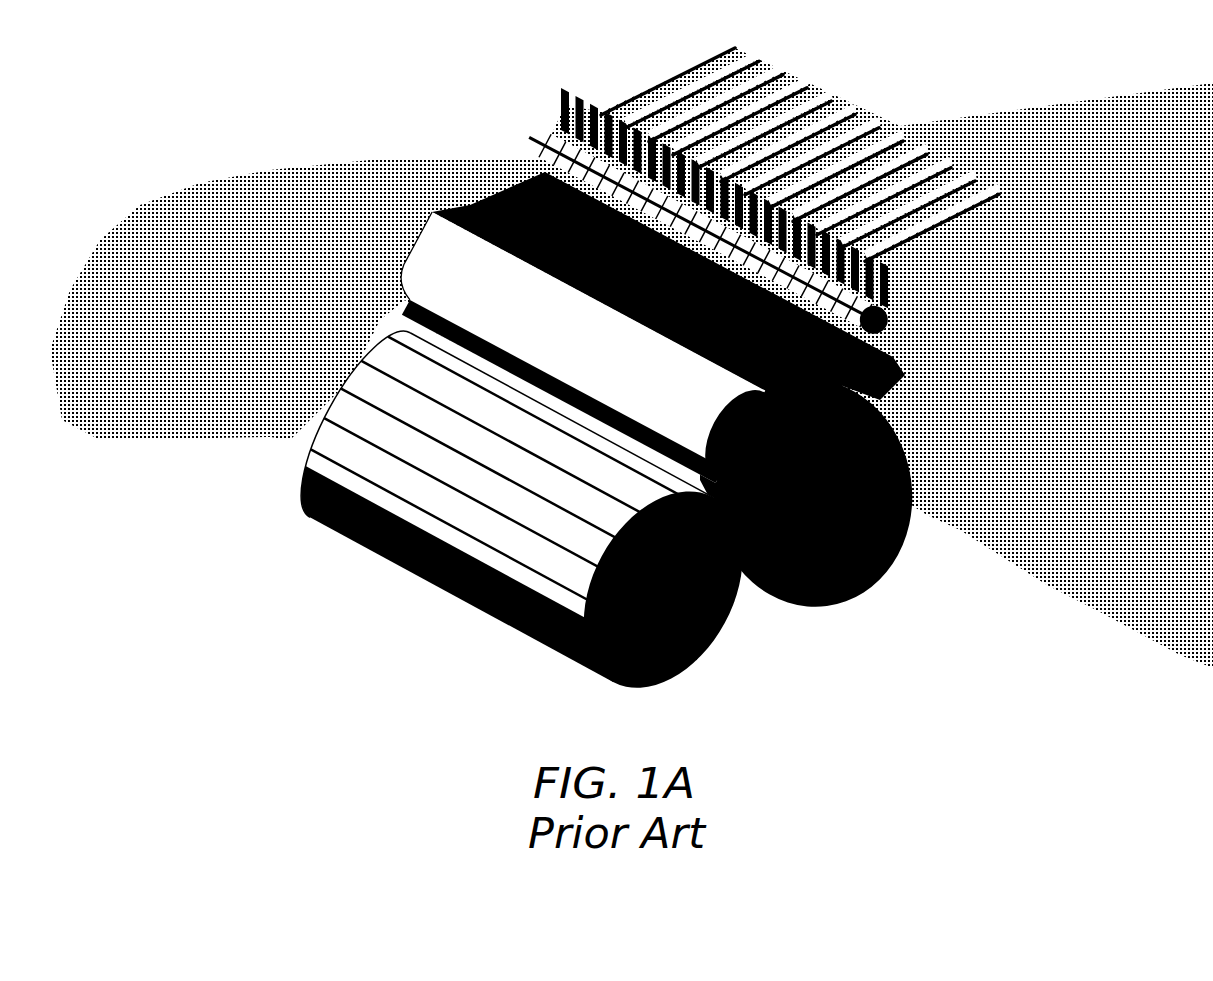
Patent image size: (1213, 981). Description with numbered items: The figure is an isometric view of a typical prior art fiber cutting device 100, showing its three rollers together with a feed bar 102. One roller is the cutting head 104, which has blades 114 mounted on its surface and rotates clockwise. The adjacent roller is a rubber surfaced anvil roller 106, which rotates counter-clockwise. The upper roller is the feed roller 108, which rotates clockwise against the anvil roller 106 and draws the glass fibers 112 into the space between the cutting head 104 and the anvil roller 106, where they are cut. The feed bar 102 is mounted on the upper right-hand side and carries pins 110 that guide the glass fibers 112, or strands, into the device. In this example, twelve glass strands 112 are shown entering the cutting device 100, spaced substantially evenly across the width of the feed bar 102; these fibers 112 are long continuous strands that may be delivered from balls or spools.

The fiber cutting device 100 is at (990, 42).
The feed bar 102 is at (544, 130).
The cutting head 104 is at (602, 672).
The anvil roller 106 is at (848, 592).
The feed roller 108 is at (430, 243).
The pins 110 is at (548, 78).
The glass fibers 112 is at (688, 76).
The blades 114 is at (376, 533).